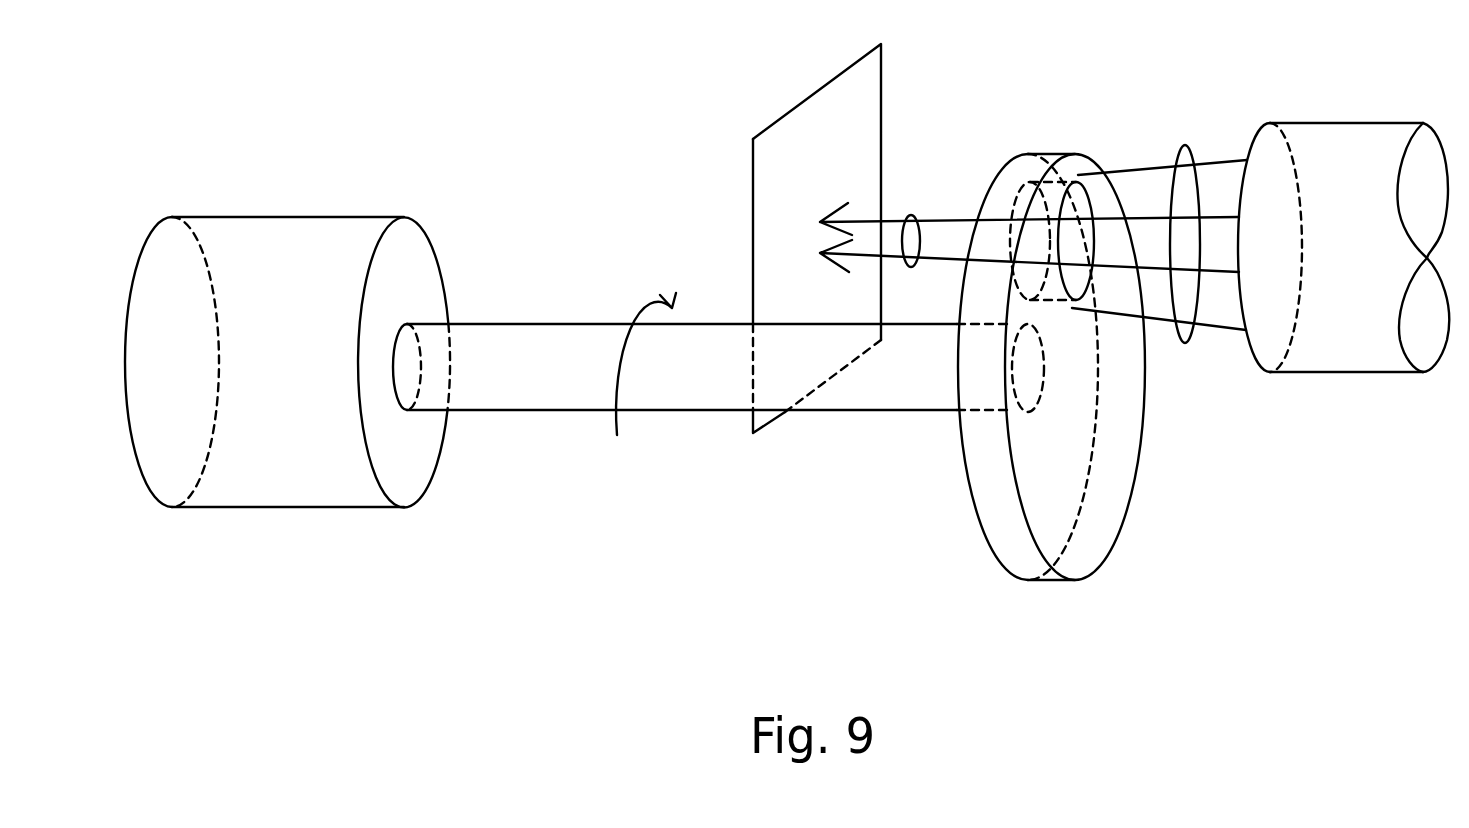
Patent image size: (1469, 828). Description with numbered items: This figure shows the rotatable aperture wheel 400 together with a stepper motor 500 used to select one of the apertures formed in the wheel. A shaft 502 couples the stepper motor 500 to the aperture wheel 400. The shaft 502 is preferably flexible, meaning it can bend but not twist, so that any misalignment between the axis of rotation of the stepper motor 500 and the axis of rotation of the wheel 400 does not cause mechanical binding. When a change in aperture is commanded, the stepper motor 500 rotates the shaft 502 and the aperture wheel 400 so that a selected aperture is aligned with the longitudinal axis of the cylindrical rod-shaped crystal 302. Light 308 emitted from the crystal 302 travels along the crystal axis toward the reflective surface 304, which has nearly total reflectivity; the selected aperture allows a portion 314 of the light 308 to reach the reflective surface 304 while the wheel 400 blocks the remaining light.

The cylindrical rod-shaped crystal 302 is at (1325, 122).
The reflective surface 304 is at (777, 122).
The light 308 is at (1186, 145).
The portion of the light 314 is at (920, 215).
The aperture wheel 400 is at (1135, 487).
The stepper motor 500 is at (298, 507).
The shaft 502 is at (520, 411).